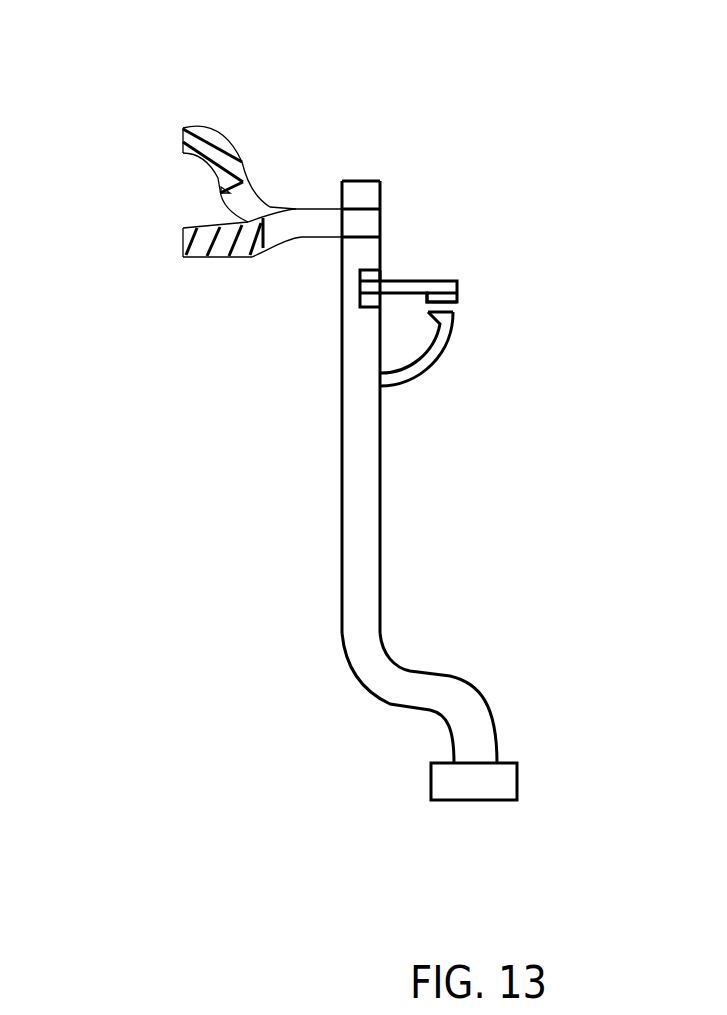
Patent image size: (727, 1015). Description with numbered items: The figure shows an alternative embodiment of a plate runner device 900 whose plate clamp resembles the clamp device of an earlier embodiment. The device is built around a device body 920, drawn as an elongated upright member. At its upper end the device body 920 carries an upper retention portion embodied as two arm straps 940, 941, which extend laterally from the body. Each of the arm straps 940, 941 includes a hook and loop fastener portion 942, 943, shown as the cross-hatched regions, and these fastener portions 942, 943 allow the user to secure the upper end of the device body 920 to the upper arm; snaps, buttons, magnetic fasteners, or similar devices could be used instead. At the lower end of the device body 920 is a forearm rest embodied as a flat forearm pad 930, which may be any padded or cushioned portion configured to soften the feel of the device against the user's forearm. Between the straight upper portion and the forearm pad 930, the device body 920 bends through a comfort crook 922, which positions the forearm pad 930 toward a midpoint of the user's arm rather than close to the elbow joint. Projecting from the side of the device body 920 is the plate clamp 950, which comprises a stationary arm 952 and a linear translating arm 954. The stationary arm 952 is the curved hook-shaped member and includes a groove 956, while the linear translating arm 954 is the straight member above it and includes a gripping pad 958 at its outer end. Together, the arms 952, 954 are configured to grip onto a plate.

The plate runner device 900 is at (513, 91).
The device body 920 is at (338, 423).
The comfort crook 922 is at (407, 707).
The flat forearm pad 930 is at (517, 782).
The arm strap 940 is at (252, 190).
The arm strap 941 is at (300, 237).
The hook and loop fastener portion 942 is at (222, 133).
The hook and loop fastener portion 943 is at (183, 257).
The plate clamp 950 is at (512, 250).
The stationary arm 952 is at (427, 370).
The linear translating arm 954 is at (422, 263).
The groove 956 is at (423, 322).
The gripping pad 958 is at (465, 289).